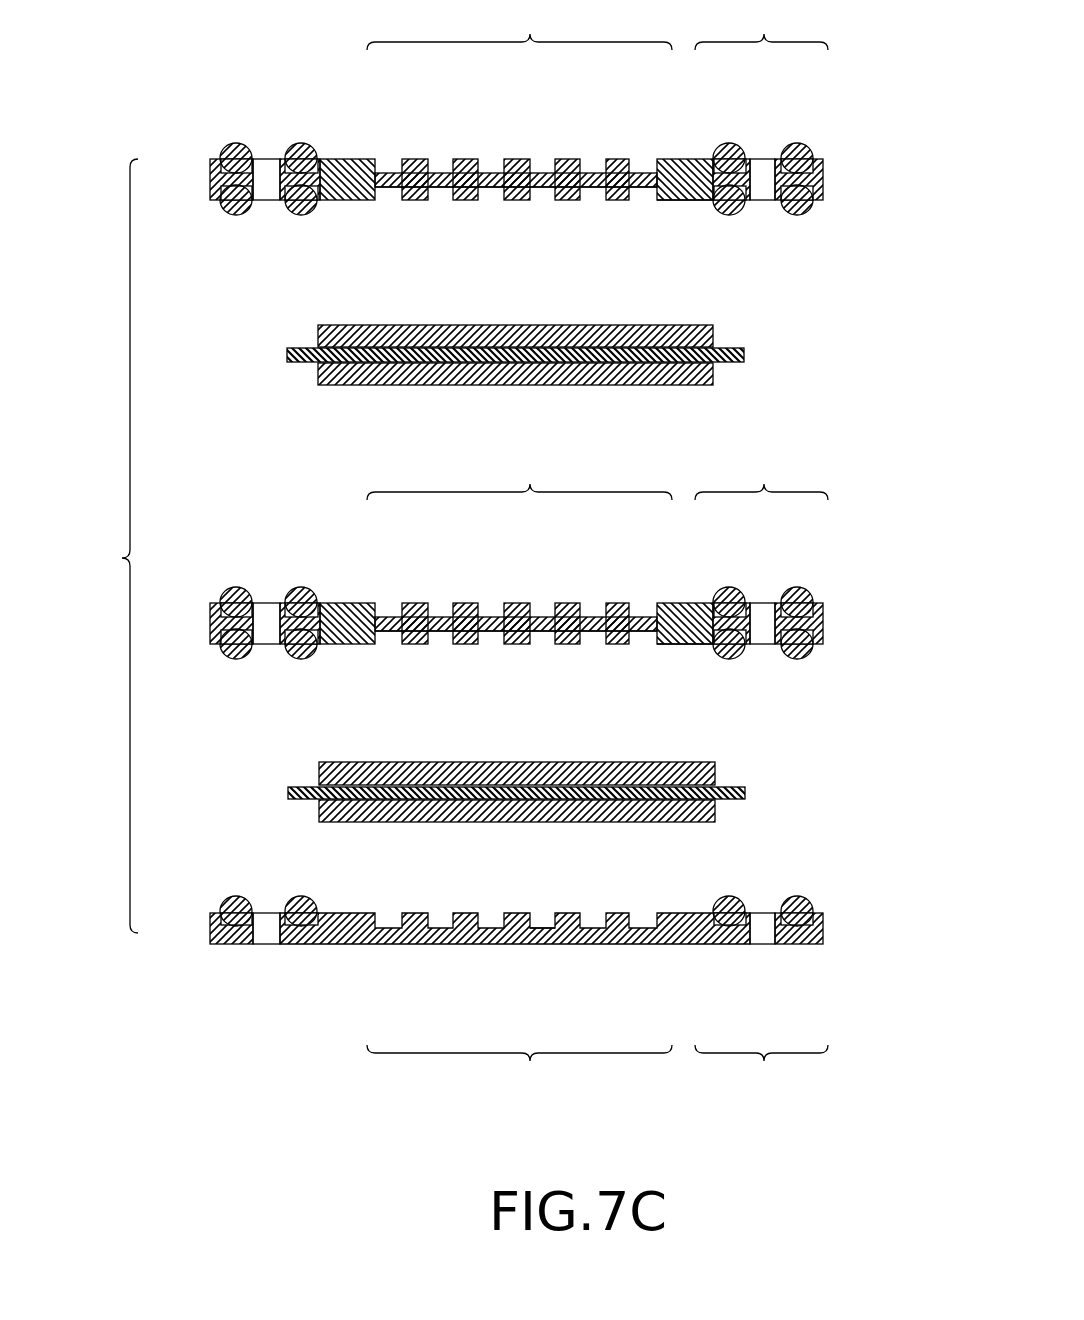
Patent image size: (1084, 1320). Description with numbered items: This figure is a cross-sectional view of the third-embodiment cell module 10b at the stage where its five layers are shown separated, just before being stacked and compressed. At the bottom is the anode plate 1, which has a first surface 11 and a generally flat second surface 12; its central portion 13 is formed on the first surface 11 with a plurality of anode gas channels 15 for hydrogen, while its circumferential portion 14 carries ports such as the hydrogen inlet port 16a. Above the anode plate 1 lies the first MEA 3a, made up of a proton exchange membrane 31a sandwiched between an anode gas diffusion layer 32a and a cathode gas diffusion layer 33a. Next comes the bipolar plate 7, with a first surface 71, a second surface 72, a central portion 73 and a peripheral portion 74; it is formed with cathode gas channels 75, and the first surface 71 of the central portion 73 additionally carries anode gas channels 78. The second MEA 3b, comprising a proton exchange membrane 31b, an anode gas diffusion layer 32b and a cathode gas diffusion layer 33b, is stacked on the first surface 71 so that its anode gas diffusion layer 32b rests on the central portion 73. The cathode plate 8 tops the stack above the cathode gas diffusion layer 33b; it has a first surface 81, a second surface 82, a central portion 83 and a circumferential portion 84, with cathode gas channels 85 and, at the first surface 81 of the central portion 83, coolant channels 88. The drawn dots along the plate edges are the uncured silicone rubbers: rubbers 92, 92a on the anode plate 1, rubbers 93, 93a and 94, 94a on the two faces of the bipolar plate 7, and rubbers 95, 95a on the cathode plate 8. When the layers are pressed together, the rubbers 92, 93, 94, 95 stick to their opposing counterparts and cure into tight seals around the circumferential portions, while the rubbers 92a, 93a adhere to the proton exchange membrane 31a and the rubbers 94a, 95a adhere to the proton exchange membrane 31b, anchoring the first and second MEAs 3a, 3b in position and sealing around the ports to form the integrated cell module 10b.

The cell module 10b is at (97, 546).
The anode plate 1 is at (549, 935).
The first surface 11 is at (662, 913).
The second surface 12 is at (430, 946).
The central portion 13 is at (519, 1072).
The circumferential portion 14 is at (761, 1072).
The anode gas channels 15 is at (550, 944).
The hydrogen inlet port 16a is at (760, 944).
The first MEA 3a is at (618, 791).
The proton exchange membrane 31a is at (745, 792).
The anode gas diffusion layer 32a is at (715, 812).
The cathode gas diffusion layer 33a is at (715, 775).
The second MEA 3b is at (616, 354).
The proton exchange membrane 31b is at (744, 355).
The anode gas diffusion layer 32b is at (713, 375).
The cathode gas diffusion layer 33b is at (713, 338).
The bipolar plate 7 is at (549, 620).
The first surface 71 is at (673, 581).
The second surface 72 is at (685, 683).
The central portion 73 is at (519, 470).
The peripheral portion 74 is at (761, 470).
The cathode gas channels 75 is at (516, 670).
The anode gas channels 78 is at (516, 586).
The cathode plate 8 is at (548, 175).
The first surface 81 is at (683, 159).
The second surface 82 is at (677, 200).
The central portion 83 is at (519, 25).
The circumferential portion 84 is at (761, 25).
The cathode gas channels 85 is at (542, 187).
The coolant channels 88 is at (541, 173).
The silicone rubber 92 is at (805, 897).
The silicone rubber 92a is at (728, 897).
The silicone rubber 93 is at (809, 676).
The silicone rubber 93a is at (746, 676).
The silicone rubber 94 is at (803, 567).
The silicone rubber 94a is at (728, 567).
The silicone rubber 95 is at (805, 215).
The silicone rubber 95a is at (738, 215).